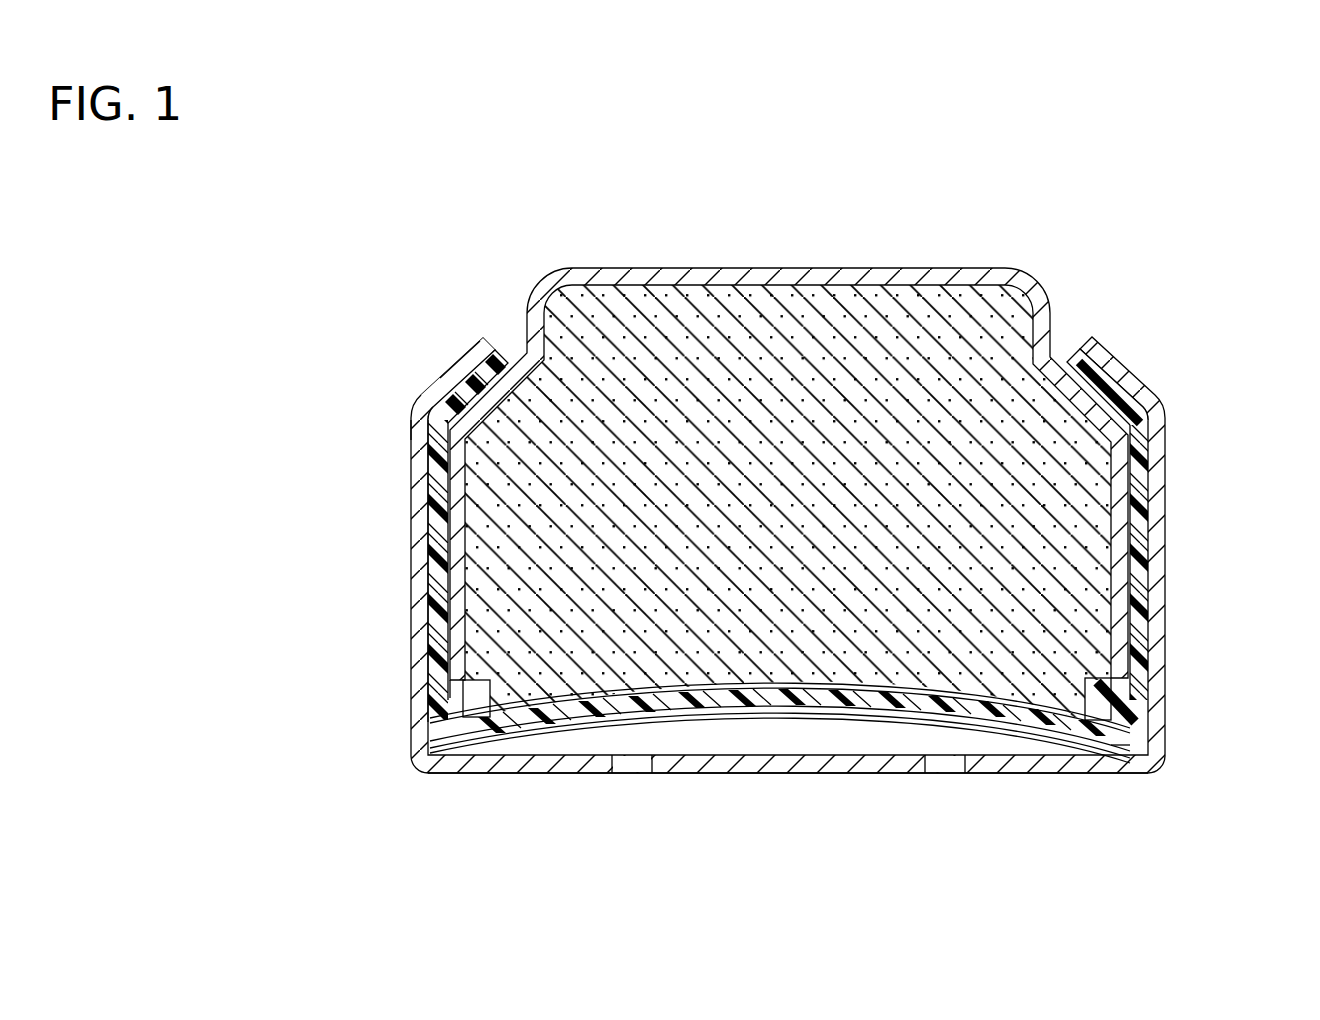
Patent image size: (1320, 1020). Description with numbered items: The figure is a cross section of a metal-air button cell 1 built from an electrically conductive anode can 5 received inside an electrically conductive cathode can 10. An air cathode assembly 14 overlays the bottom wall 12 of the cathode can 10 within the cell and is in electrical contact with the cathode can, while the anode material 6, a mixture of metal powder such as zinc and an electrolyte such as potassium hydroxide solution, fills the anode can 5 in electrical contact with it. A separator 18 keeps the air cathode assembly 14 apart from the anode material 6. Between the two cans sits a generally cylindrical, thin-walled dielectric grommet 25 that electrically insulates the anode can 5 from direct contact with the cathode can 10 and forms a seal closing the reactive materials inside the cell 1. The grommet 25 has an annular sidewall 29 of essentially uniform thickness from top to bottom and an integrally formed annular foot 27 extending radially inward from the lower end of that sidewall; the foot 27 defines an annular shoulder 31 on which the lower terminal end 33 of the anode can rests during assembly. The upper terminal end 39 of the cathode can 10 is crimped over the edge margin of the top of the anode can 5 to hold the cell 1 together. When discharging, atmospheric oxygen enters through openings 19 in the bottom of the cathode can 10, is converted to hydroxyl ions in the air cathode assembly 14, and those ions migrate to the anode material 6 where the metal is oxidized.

The metal-air button cell 1 is at (1150, 250).
The anode can 5 is at (968, 262).
The anode material 6 is at (1027, 417).
The cathode can 10 is at (805, 790).
The bottom wall 12 is at (1092, 775).
The air cathode assembly 14 is at (700, 722).
The separator 18 is at (1133, 725).
The openings 19 is at (623, 773).
The grommet 25 is at (420, 450).
The annular foot 27 is at (1097, 716).
The sidewall 29 is at (437, 568).
The annular shoulder 31 is at (1118, 745).
The terminal end of the anode can 33 is at (450, 682).
The terminal end of the cathode can 39 is at (487, 337).